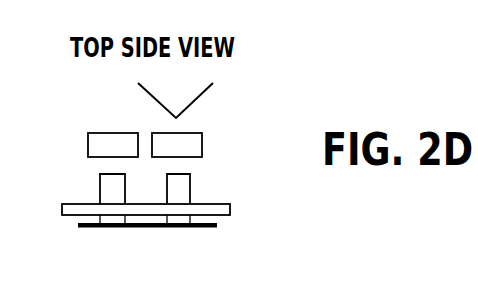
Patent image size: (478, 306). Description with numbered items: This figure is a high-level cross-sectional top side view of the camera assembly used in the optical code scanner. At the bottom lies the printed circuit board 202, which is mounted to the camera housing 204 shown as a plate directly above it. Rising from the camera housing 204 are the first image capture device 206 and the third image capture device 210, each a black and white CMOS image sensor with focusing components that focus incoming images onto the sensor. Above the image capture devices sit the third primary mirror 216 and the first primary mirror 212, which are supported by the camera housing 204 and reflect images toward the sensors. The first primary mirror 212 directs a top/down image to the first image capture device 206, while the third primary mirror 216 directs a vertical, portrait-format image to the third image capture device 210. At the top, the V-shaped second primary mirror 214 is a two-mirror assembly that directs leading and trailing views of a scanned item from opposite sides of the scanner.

The printed circuit board 202 is at (218, 227).
The camera housing 204 is at (232, 210).
The first image capture device 206 is at (190, 190).
The third image capture device 210 is at (100, 187).
The first primary mirror 212 is at (202, 143).
The second primary mirror 214 is at (198, 97).
The third primary mirror 216 is at (88, 143).